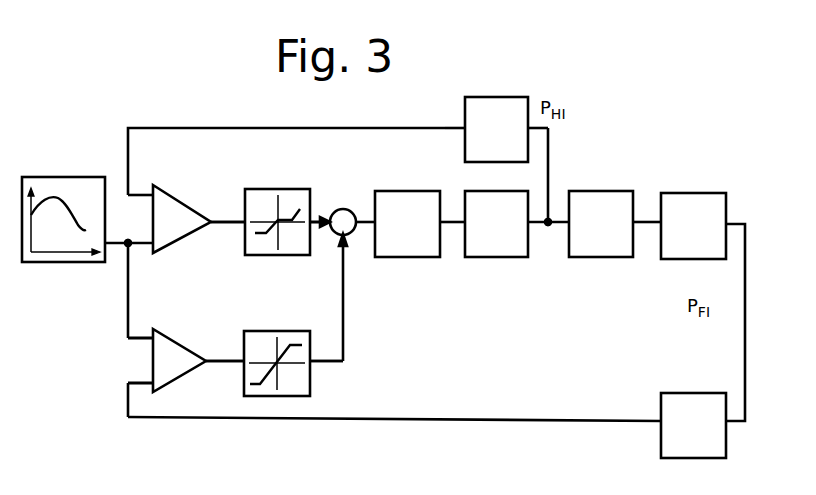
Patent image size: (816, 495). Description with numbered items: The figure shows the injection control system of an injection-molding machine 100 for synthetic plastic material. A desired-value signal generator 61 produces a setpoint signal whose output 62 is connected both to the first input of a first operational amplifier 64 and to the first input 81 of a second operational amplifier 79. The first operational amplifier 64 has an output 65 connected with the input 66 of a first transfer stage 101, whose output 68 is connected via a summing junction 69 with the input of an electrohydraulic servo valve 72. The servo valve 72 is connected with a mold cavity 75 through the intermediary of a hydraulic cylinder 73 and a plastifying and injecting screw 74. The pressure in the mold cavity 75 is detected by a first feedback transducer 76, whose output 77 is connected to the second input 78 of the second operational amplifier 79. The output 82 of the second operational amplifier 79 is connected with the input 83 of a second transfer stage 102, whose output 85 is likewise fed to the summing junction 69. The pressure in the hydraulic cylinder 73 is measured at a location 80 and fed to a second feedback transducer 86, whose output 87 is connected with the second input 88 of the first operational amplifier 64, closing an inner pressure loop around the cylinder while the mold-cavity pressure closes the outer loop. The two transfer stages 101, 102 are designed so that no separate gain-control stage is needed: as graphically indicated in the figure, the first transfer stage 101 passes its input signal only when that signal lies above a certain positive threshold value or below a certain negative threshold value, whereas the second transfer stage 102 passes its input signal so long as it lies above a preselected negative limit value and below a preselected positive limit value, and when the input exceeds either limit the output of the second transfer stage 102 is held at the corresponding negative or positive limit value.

The desired-value signal generator 61 is at (82, 180).
The output of the desired-value signal generator 62 is at (126, 250).
The first operational amplifier 64 is at (176, 200).
The output of the first operational amplifier 65 is at (212, 221).
The input of the first transfer stage 66 is at (242, 226).
The output of the first transfer stage 68 is at (312, 232).
The summing junction 69 is at (344, 212).
The electrohydraulic servo valve 72 is at (392, 200).
The hydraulic cylinder 73 is at (482, 202).
The plastifying and injecting screw 74 is at (586, 202).
The mold cavity 75 is at (678, 203).
The first feedback transducer 76 is at (678, 404).
The output of the first feedback transducer 77 is at (660, 420).
The second input of the second operational amplifier 78 is at (152, 390).
The second operational amplifier 79 is at (176, 340).
The pressure measuring location 80 is at (546, 230).
The first input of the second operational amplifier 81 is at (150, 336).
The output of the second operational amplifier 82 is at (208, 360).
The input of the second transfer stage 83 is at (242, 366).
The output of the second transfer stage 85 is at (314, 366).
The second feedback transducer 86 is at (494, 108).
The output of the second feedback transducer 87 is at (462, 126).
The second input of the first operational amplifier 88 is at (150, 194).
The injection-molding machine 100 is at (354, 116).
The first transfer stage 101 is at (268, 198).
The second transfer stage 102 is at (268, 338).